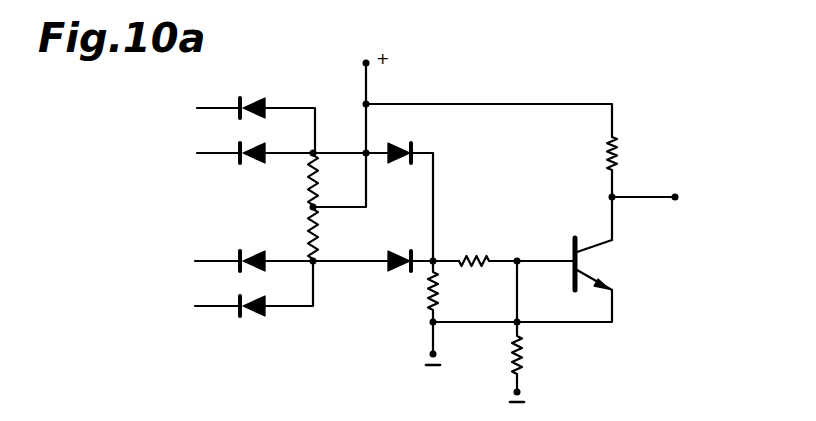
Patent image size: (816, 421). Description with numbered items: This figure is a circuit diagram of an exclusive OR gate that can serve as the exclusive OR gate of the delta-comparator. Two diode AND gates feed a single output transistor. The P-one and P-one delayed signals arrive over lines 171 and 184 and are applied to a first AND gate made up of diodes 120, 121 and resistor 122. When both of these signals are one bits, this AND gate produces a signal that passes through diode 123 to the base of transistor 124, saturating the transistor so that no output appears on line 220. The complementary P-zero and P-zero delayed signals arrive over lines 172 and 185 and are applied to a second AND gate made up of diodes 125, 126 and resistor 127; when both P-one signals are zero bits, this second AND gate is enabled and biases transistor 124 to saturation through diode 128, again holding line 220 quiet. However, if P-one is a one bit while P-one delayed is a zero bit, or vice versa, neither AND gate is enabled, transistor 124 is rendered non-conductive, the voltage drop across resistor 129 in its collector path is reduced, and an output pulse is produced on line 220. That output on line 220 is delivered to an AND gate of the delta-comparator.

The diode 120 is at (255, 98).
The diode 121 is at (251, 160).
The resistor 122 is at (310, 180).
The diode 123 is at (398, 148).
The transistor 124 is at (570, 255).
The diode 125 is at (248, 253).
The diode 126 is at (250, 314).
The resistor 127 is at (319, 231).
The diode 128 is at (399, 272).
The resistor 129 is at (616, 153).
The line 171 is at (209, 107).
The line 172 is at (221, 260).
The line 184 is at (206, 158).
The line 185 is at (206, 306).
The output line 220 is at (651, 197).